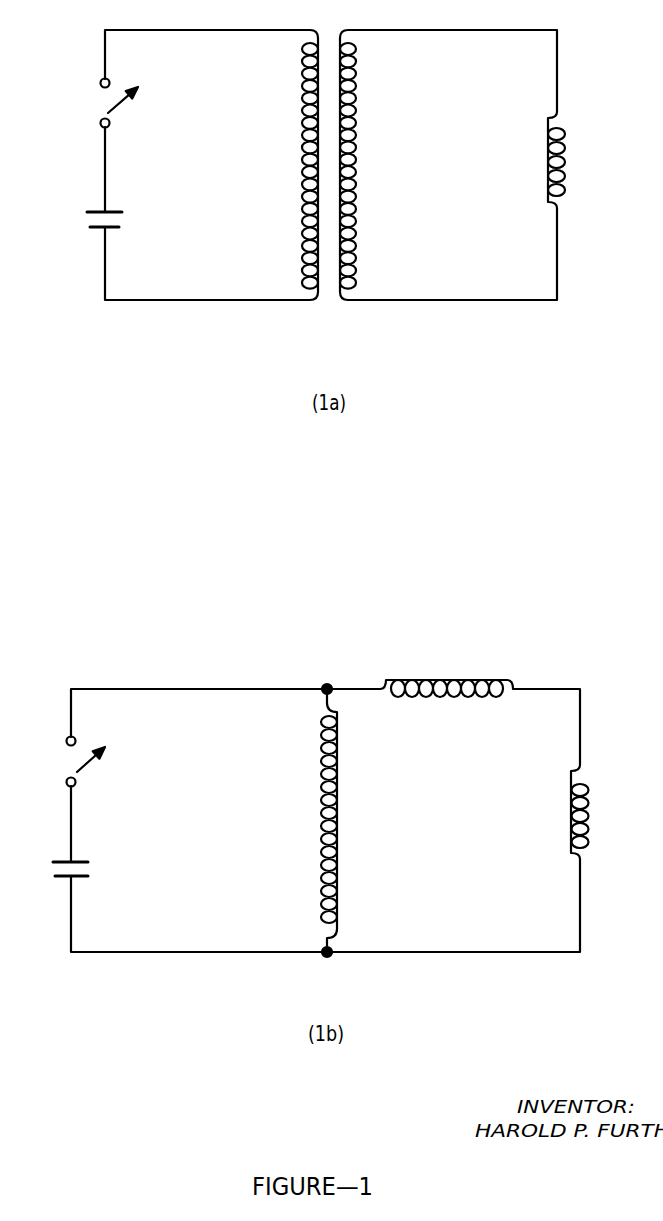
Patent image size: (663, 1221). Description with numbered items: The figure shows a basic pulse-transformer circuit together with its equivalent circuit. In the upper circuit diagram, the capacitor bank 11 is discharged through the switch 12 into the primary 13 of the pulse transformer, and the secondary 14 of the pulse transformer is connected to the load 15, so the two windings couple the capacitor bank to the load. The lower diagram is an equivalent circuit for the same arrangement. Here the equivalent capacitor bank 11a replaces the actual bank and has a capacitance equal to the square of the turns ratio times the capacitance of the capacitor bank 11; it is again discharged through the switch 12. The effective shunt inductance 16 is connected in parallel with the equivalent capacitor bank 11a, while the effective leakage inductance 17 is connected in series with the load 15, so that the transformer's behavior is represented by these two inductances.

In FIG. 1a, the capacitor bank 11 is at (81, 218).
In FIG. 1b, the equivalent capacitor bank 11a is at (49, 869).
In FIG. 1a, the switch 12 is at (99, 98).
In FIG. 1b, the switch 12 is at (67, 757).
In FIG. 1a, the primary 13 is at (292, 87).
In FIG. 1a, the secondary 14 is at (367, 88).
In FIG. 1a, the load 15 is at (574, 148).
In FIG. 1b, the load 15 is at (612, 793).
In FIG. 1b, the effective shunt inductance 16 is at (350, 748).
In FIG. 1b, the effective leakage inductance 17 is at (473, 668).